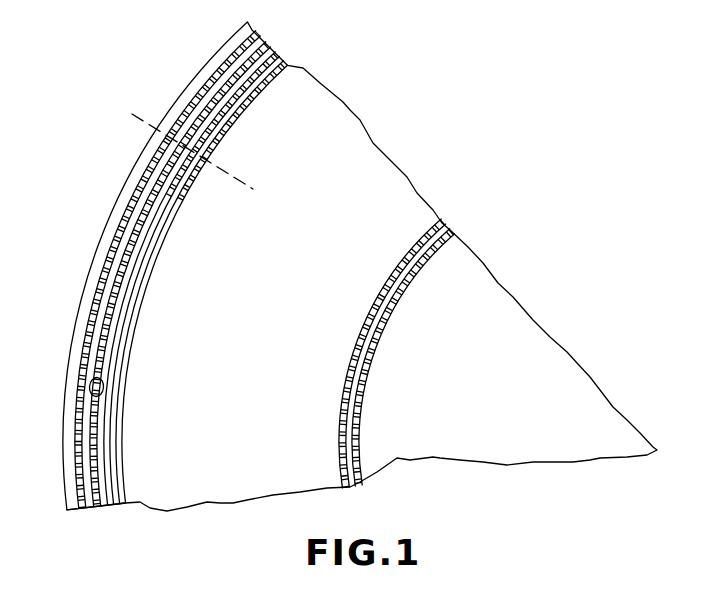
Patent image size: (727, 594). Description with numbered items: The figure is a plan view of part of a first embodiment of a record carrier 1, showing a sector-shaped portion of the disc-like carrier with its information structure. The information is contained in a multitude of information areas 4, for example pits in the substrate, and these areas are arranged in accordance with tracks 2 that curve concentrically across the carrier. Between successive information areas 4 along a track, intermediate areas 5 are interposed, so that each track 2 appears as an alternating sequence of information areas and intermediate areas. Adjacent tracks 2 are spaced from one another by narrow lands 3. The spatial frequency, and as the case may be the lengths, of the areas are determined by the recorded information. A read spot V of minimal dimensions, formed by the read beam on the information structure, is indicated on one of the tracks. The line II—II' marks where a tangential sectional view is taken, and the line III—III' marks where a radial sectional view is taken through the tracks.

The magnetic disc segment 1 is at (421, 176).
The tracks 2 is at (444, 223).
The lands 3 is at (103, 482).
The information areas 4 is at (226, 143).
The intermediate areas 5 is at (192, 183).
The read spot V is at (105, 388).
The line II—II' II is at (152, 167).
The line III—III' III is at (128, 112).